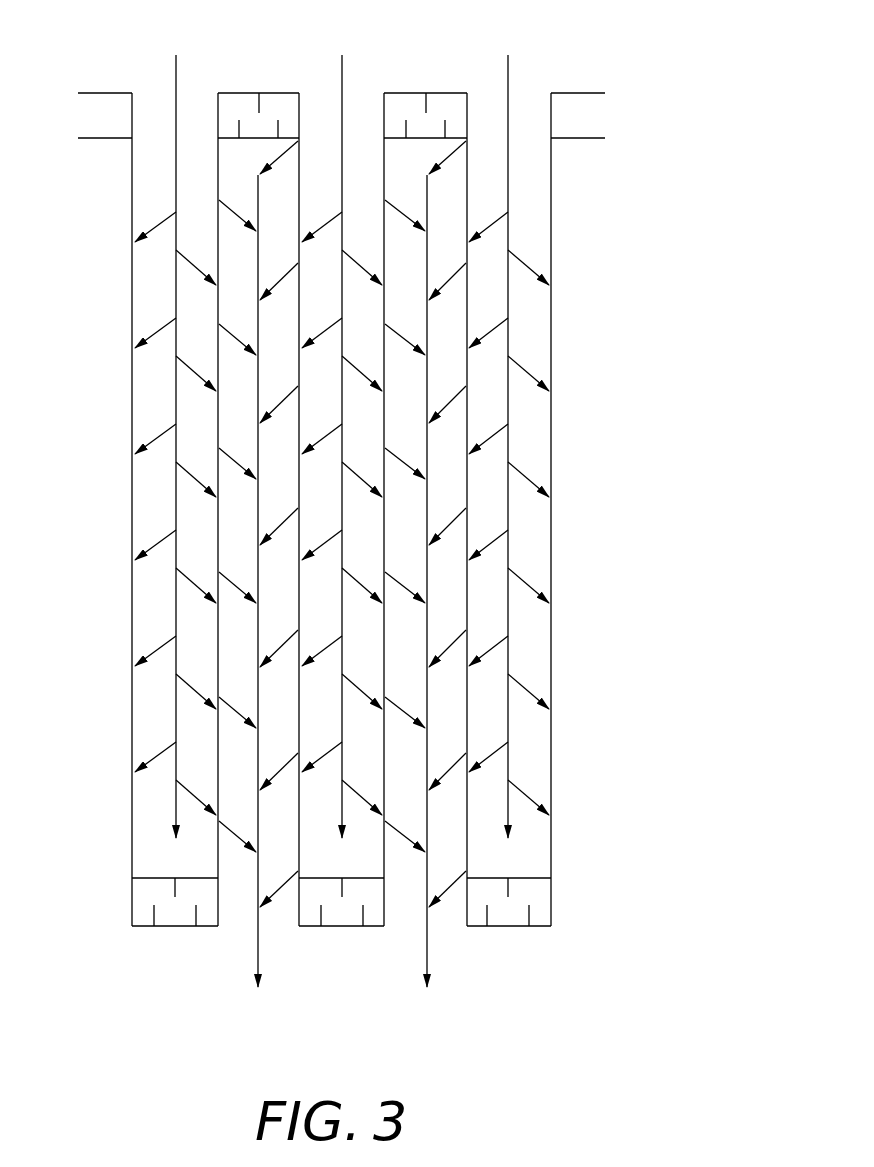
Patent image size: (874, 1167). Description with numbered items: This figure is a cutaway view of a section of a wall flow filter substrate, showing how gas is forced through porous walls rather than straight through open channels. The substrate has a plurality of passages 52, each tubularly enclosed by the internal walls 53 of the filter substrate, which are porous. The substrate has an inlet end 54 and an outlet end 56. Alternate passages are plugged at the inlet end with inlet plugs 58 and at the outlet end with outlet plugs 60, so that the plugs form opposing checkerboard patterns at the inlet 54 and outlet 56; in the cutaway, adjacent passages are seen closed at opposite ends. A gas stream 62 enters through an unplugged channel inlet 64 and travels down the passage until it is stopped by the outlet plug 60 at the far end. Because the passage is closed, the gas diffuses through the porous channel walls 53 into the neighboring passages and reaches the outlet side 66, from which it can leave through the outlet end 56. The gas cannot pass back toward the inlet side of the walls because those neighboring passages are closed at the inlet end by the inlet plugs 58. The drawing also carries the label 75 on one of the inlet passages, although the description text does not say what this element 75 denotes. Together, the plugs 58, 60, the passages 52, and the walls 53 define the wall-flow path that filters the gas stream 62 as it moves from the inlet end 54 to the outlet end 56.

The passages 52 is at (127, 165).
The internal walls 53 is at (300, 468).
The inlet end 54 is at (650, 62).
The outlet end 56 is at (560, 952).
The inlet plugs 58 is at (96, 100).
The outlet plugs 60 is at (175, 913).
The gas stream 62 is at (343, 57).
The channel inlet 64 is at (208, 125).
The outlet side 66 is at (250, 915).
The first flow passage 75 is at (133, 468).